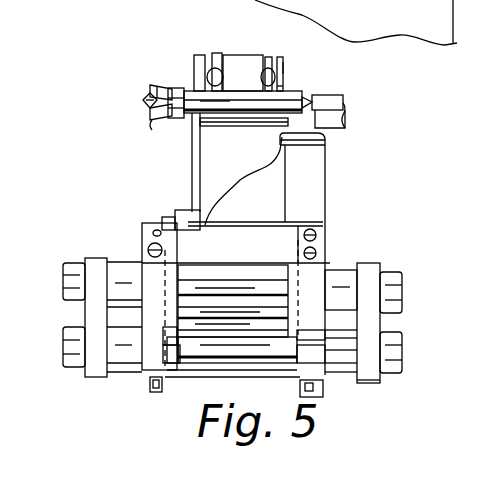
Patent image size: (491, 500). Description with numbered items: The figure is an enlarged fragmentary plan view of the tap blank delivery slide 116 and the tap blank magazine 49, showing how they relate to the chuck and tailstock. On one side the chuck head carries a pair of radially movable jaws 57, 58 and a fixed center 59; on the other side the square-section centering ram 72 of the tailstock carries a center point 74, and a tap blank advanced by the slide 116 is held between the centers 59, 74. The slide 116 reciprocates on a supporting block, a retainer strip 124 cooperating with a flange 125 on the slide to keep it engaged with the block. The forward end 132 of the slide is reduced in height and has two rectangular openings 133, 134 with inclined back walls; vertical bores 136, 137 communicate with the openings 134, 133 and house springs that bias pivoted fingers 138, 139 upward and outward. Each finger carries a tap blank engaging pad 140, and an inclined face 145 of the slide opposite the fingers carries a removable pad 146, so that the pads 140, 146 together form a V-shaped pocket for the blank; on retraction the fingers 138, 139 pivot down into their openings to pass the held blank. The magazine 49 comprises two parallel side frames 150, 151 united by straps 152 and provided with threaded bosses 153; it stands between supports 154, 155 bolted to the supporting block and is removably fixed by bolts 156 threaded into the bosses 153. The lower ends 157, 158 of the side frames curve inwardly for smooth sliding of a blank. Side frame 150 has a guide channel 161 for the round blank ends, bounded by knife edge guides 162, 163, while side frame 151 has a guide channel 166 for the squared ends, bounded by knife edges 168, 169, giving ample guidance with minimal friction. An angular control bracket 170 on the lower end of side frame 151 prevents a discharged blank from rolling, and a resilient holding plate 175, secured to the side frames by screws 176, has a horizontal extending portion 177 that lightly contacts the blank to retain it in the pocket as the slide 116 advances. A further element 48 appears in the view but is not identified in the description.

The fluid supply assembly 48 is at (127, 48).
The tap blank magazine 49 is at (405, 238).
The jaw 57 is at (150, 88).
The jaw 58 is at (152, 120).
The fixed center 59 is at (143, 101).
The centering ram 72 is at (350, 118).
The center point 74 is at (315, 100).
The tap blank delivery slide 116 is at (236, 55).
The elongated retainer strip 124 is at (186, 212).
The flange 125 is at (192, 163).
The forward end of the slide 132 is at (268, 57).
The rectangular opening 133 is at (279, 60).
The rectangular opening 134 is at (214, 56).
The vertical bore 136 is at (198, 68).
The vertical bore 137 is at (283, 81).
The finger 138 is at (283, 68).
The finger 139 is at (205, 83).
The tap blank engaging pad 140 is at (262, 70).
The face of the slide 145 is at (216, 128).
The pad 146 is at (258, 128).
The side frame 150 is at (322, 360).
The side frame 151 is at (125, 372).
The bars or straps 152 is at (325, 390).
The boss 153 is at (342, 270).
The support 154 is at (380, 380).
The support 155 is at (100, 258).
The bolt 156 is at (70, 272).
The lower end of side frame 157 is at (335, 263).
The lower end of side frame 158 is at (150, 232).
The guide channel 161 is at (311, 355).
The knife edge guide 162 is at (311, 338).
The knife edge guide 163 is at (285, 378).
The guide channel 166 is at (161, 354).
The knife edge 168 is at (160, 336).
The knife edge 169 is at (160, 378).
The angular control bracket 170 is at (166, 218).
The resilient holding plate 175 is at (345, 188).
The screw 176 is at (320, 238).
The horizontal extending portion 177 is at (322, 158).